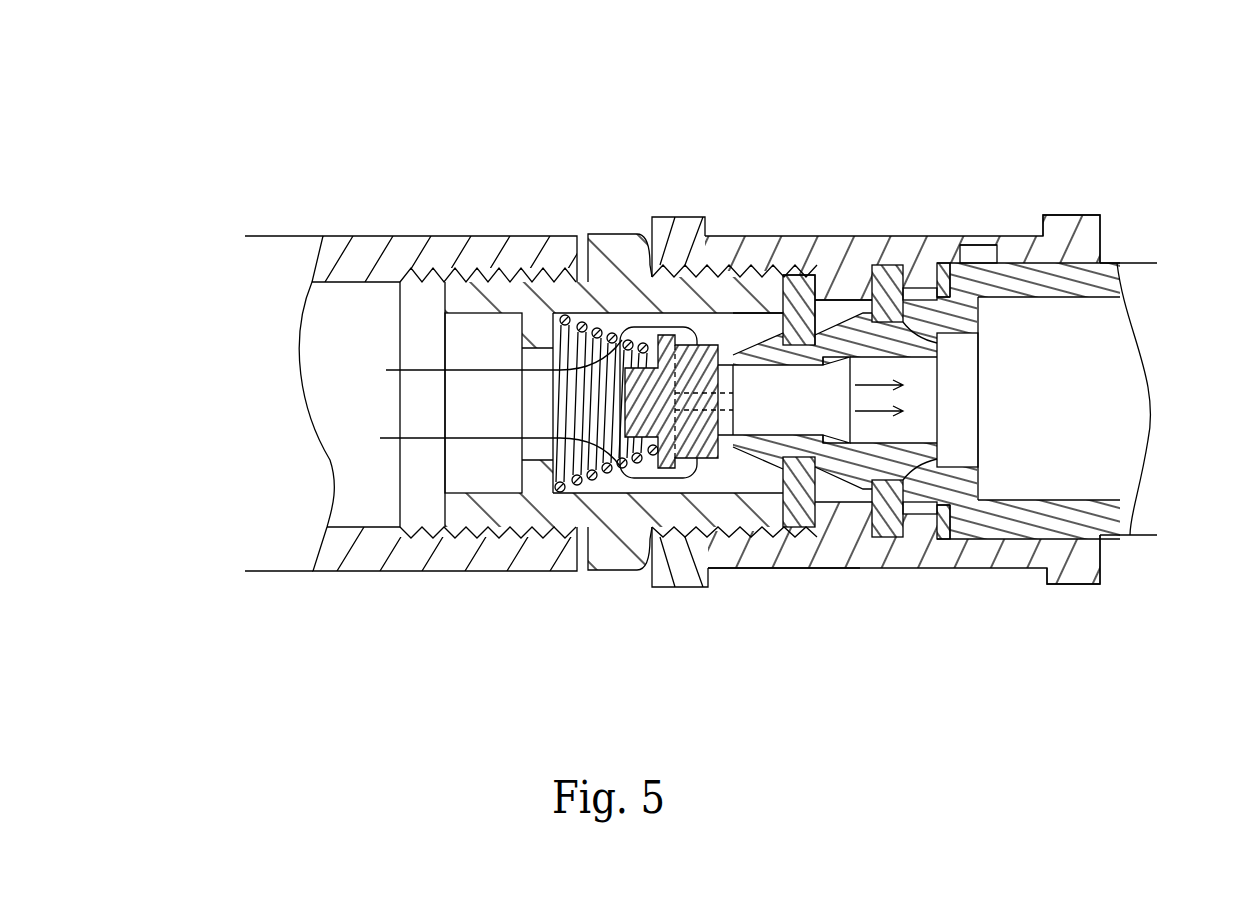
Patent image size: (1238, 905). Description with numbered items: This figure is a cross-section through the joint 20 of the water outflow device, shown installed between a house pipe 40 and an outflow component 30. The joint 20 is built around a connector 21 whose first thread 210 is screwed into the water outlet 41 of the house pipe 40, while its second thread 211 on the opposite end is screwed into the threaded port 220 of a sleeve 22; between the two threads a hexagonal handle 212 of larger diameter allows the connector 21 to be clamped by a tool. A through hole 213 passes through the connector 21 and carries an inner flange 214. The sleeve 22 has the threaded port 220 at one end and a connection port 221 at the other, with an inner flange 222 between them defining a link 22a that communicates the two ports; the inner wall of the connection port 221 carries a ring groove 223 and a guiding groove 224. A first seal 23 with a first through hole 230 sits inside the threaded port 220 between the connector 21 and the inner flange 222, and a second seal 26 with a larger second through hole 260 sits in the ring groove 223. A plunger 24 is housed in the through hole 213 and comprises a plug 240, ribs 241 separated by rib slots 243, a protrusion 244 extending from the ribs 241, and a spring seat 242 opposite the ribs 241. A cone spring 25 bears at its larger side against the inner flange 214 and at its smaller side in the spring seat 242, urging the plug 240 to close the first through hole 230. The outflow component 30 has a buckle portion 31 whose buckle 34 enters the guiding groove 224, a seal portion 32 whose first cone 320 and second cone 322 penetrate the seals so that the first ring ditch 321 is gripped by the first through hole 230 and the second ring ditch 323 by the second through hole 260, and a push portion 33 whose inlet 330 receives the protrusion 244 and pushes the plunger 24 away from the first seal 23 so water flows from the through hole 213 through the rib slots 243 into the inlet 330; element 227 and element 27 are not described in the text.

The joint 20 is at (623, 137).
The connector 21 is at (632, 677).
The first thread 210 is at (500, 520).
The second thread 211 is at (663, 585).
The handle 212 is at (600, 562).
The through hole 213 is at (623, 320).
The inner flange 214 is at (527, 468).
The sleeve 22 is at (1013, 558).
The link 22a is at (820, 513).
The threaded port 220 is at (723, 360).
The connection port 221 is at (1110, 267).
The inner flange 222 is at (863, 510).
The ring groove 223 is at (903, 518).
The guiding groove 224 is at (1003, 255).
The locking pin 227 is at (995, 245).
The first seal 23 is at (836, 493).
The first through hole 230 is at (835, 443).
The plunger 24 is at (830, 650).
The plug 240 is at (745, 537).
The ribs 241 is at (793, 520).
The spring seat 242 is at (675, 530).
The rib slots 243 is at (723, 440).
The protrusion 244 is at (735, 387).
The spring 25 is at (598, 313).
The second seal 26 is at (980, 303).
The second through hole 260 is at (980, 350).
The lock nut 27 is at (683, 263).
The outflow component 30 is at (1140, 262).
The buckle portion 31 is at (1057, 272).
The seal portion 32 is at (948, 137).
The first cone 320 is at (767, 340).
The first ring ditch 321 is at (795, 320).
The second cone 322 is at (843, 300).
The second ring ditch 323 is at (885, 320).
The push portion 33 is at (758, 325).
The inlet 330 is at (805, 377).
The buckle 34 is at (973, 253).
The house pipe 40 is at (268, 571).
The water outlet 41 is at (398, 302).